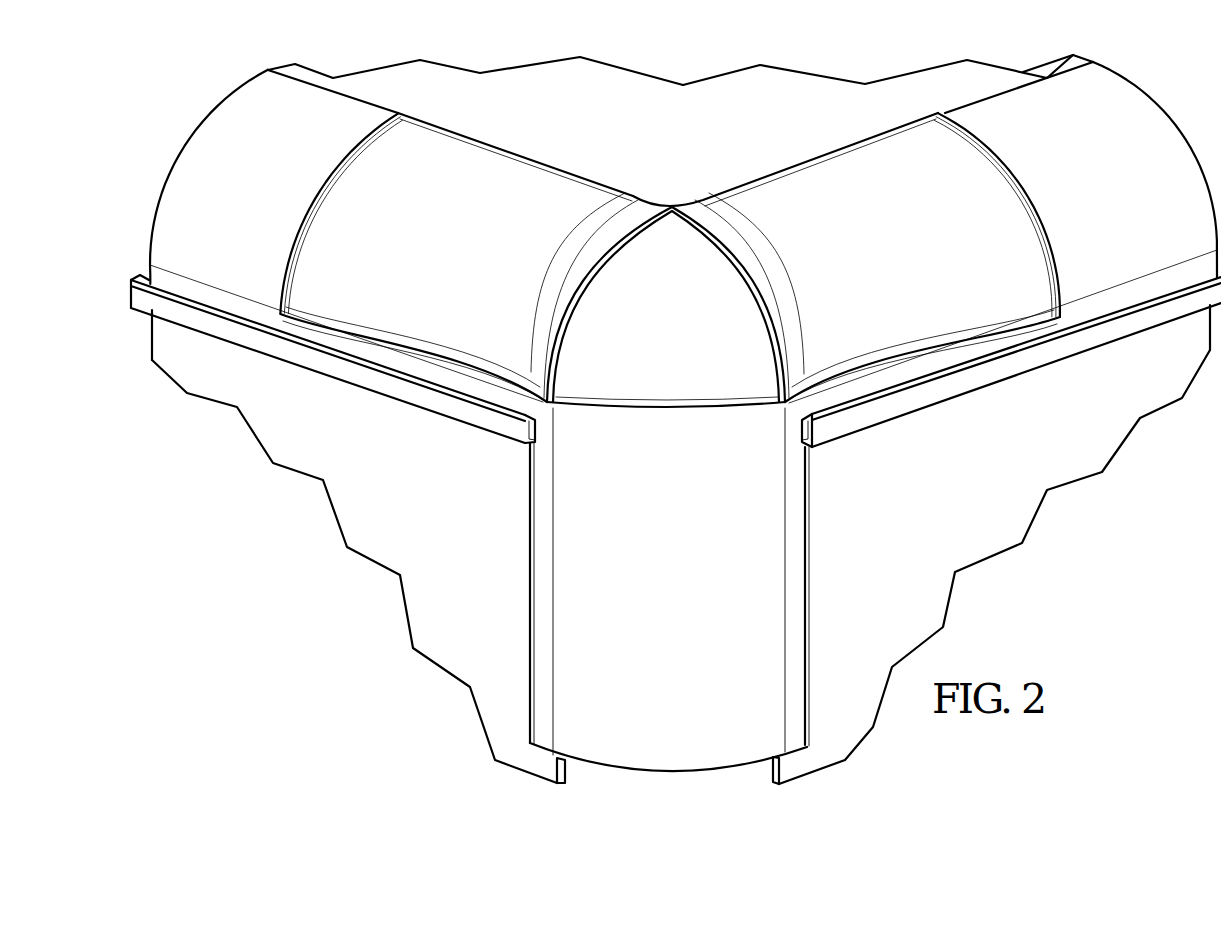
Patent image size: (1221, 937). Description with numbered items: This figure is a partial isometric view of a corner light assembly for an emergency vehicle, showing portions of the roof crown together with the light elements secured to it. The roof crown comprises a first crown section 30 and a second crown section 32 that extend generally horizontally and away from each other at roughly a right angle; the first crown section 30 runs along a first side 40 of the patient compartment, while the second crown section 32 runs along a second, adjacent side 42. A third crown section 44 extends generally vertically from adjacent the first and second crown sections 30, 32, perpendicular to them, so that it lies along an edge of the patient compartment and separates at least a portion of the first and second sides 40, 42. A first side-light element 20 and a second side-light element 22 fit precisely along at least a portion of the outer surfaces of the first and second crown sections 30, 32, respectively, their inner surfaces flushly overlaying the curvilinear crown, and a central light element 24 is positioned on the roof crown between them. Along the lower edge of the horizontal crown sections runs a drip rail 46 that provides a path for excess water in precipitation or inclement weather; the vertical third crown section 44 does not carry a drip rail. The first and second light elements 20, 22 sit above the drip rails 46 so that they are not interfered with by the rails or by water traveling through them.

The first side-light element 20 is at (498, 183).
The second side-light element 22 is at (843, 183).
The central light element 24 is at (680, 243).
The first crown section 30 is at (232, 118).
The second crown section 32 is at (1137, 123).
The first side 40 is at (357, 472).
The second side 42 is at (977, 533).
The third crown section 44 is at (593, 698).
The drip rail 46 is at (340, 375).